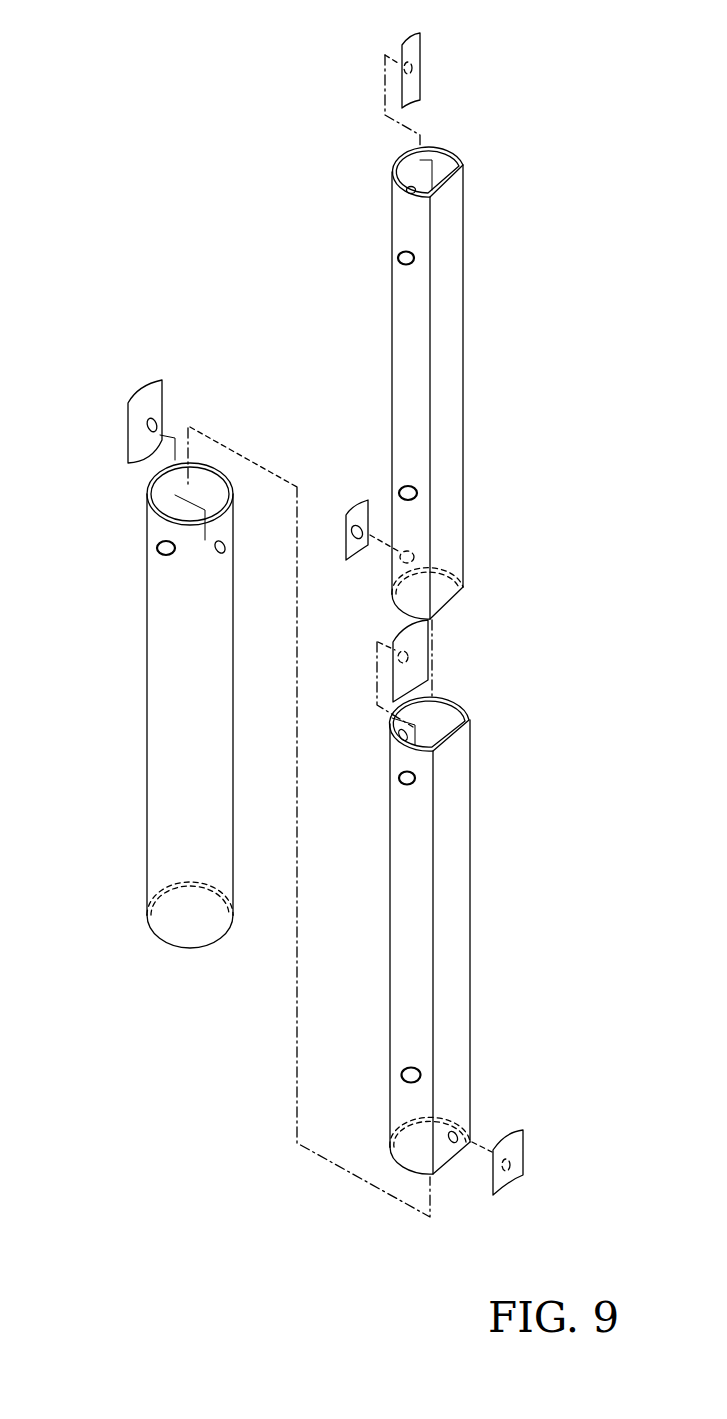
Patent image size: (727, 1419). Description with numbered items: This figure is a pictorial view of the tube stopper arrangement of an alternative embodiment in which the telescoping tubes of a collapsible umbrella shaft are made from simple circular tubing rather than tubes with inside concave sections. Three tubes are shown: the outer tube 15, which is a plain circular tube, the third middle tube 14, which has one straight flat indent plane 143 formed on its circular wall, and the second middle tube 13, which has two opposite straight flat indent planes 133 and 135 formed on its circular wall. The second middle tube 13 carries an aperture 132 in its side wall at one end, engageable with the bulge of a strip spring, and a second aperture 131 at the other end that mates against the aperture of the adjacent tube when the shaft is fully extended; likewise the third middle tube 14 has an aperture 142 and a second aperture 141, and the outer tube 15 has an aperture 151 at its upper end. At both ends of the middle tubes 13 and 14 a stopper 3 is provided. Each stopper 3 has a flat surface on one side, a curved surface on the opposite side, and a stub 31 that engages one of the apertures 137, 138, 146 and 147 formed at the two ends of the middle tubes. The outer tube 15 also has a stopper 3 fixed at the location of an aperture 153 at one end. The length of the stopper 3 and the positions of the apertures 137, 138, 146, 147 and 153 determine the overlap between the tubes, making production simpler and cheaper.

The stopper 3 is at (407, 40).
The stub 31 is at (420, 72).
The second middle tube 13 is at (453, 222).
The second aperture 131 is at (397, 258).
The aperture 132 is at (402, 488).
The flat indent plane 133 is at (448, 358).
The flat indent plane 135 is at (405, 162).
The aperture 137 is at (404, 188).
The aperture 138 is at (417, 556).
The third middle tube 14 is at (392, 934).
The second aperture 141 is at (397, 780).
The aperture 142 is at (400, 1077).
The flat indent plane 143 is at (462, 802).
The aperture 146 is at (392, 722).
The aperture 147 is at (453, 1145).
The outer tube 15 is at (234, 735).
The aperture 151 is at (157, 550).
The aperture 153 is at (226, 545).